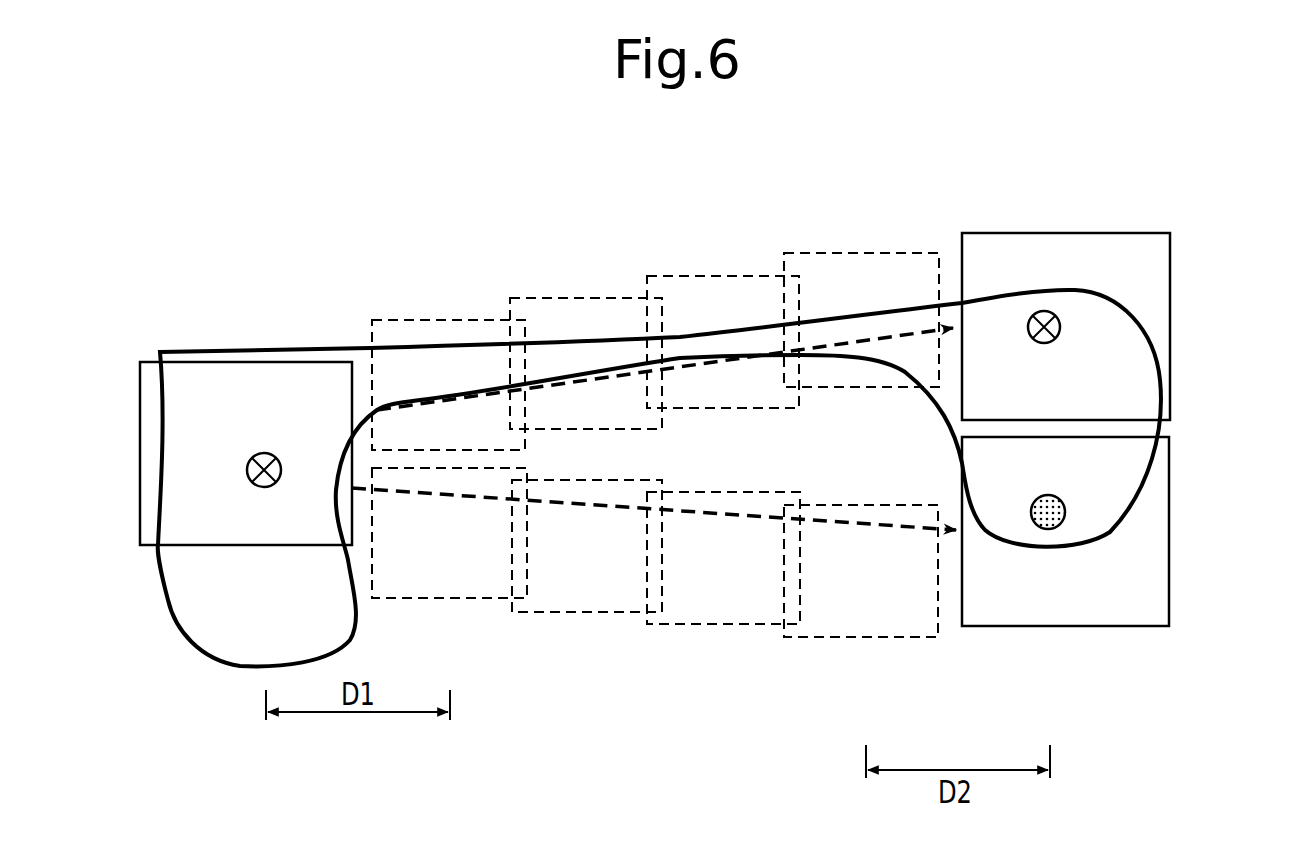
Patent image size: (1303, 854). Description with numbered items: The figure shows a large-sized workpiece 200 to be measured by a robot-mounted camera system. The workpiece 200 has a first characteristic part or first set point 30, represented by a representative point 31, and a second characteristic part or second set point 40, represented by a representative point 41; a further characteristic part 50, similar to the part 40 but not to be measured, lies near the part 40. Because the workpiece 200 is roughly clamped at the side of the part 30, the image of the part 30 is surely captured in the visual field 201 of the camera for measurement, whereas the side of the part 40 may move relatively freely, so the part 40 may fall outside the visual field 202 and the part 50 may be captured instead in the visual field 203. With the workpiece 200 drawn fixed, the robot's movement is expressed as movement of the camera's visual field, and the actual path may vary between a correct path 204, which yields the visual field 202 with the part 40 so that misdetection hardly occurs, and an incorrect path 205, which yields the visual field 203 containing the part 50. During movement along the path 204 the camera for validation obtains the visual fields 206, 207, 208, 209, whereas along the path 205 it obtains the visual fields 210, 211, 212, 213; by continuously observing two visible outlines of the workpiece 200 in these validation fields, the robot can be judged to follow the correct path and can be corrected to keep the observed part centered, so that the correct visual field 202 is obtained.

The workpiece 200 is at (248, 350).
The visual field of the camera for measurement 201 is at (139, 448).
The visual field of the camera 202 is at (1170, 327).
The visual field including the characteristic part 50 203 is at (1170, 530).
The path of movement 204 is at (840, 343).
The path of movement 205 is at (885, 532).
The visual field 206 is at (451, 320).
The visual field 207 is at (590, 298).
The visual field 208 is at (725, 276).
The visual field 209 is at (866, 253).
The visual field 210 is at (447, 600).
The visual field 211 is at (585, 612).
The visual field 212 is at (720, 625).
The visual field 213 is at (862, 638).
The first set point 30 is at (244, 482).
The representative point 31 is at (265, 454).
The second set point 40 is at (1053, 348).
The representative point 41 is at (1060, 327).
The characteristic part 50 is at (1058, 530).